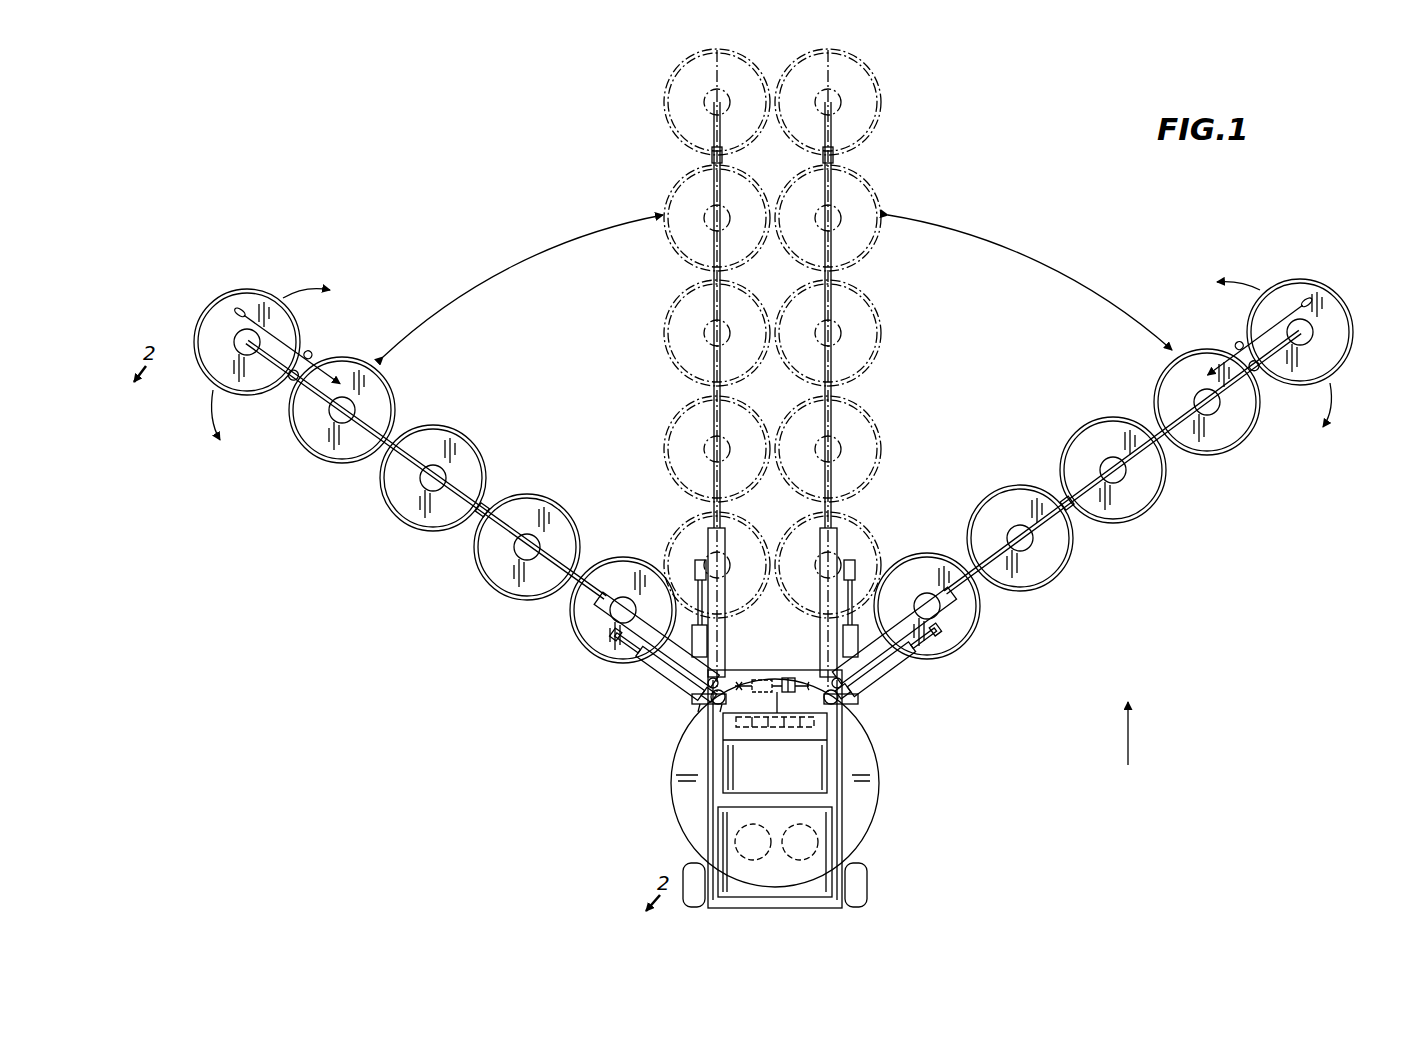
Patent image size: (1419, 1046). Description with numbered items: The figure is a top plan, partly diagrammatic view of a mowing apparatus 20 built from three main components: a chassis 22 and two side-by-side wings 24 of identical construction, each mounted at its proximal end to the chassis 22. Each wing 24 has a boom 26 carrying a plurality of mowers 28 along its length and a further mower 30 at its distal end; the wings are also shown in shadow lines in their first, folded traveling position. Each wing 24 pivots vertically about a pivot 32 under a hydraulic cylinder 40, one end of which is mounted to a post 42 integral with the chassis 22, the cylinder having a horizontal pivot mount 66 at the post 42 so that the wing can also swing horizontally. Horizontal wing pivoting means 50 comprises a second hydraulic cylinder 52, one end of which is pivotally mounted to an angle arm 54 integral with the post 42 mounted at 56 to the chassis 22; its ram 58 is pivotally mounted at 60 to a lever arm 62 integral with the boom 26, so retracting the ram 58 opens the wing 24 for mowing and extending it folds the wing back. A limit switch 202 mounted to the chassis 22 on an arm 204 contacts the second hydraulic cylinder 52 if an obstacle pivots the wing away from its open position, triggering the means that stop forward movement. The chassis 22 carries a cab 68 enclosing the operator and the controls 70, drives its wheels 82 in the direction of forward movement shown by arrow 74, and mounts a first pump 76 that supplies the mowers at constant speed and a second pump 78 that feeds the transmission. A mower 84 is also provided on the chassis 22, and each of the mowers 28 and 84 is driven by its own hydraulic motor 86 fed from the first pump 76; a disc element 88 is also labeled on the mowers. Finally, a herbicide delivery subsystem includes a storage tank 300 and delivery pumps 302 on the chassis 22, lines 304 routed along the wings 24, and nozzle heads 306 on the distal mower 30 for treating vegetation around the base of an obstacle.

The mowing apparatus 20 is at (983, 594).
The chassis 22 is at (881, 808).
The wing 24 is at (403, 427).
The boom 26 is at (582, 616).
The mower 28 is at (342, 471).
The mower 30 is at (263, 399).
The pivot 32 is at (1071, 515).
The hydraulic cylinder 40 is at (895, 626).
The post 42 is at (700, 689).
The horizontal wing pivoting means 50 is at (659, 676).
The second hydraulic cylinder 52 is at (897, 674).
The angle arm 54 is at (796, 691).
The mounting of post to chassis 56 is at (712, 693).
The ram 58 is at (931, 646).
The pivotal mounting 60 is at (953, 630).
The lever arm 62 is at (624, 641).
The horizontal pivot mount 66 is at (726, 683).
The cab 68 is at (806, 781).
The controls 70 is at (787, 726).
The arrow 74 is at (1128, 733).
The first pump 76 is at (810, 852).
The second pump 78 is at (763, 852).
The wheel 82 is at (868, 880).
The mower 84 is at (684, 807).
The hydraulic motor 86 is at (234, 330).
The cutting disc 88 is at (310, 436).
The limit switch 202 is at (866, 700).
The arm 204 is at (716, 702).
The storage tank 300 is at (845, 704).
The delivery pump 302 is at (752, 683).
The line 304 is at (288, 338).
The nozzle head 306 is at (236, 306).